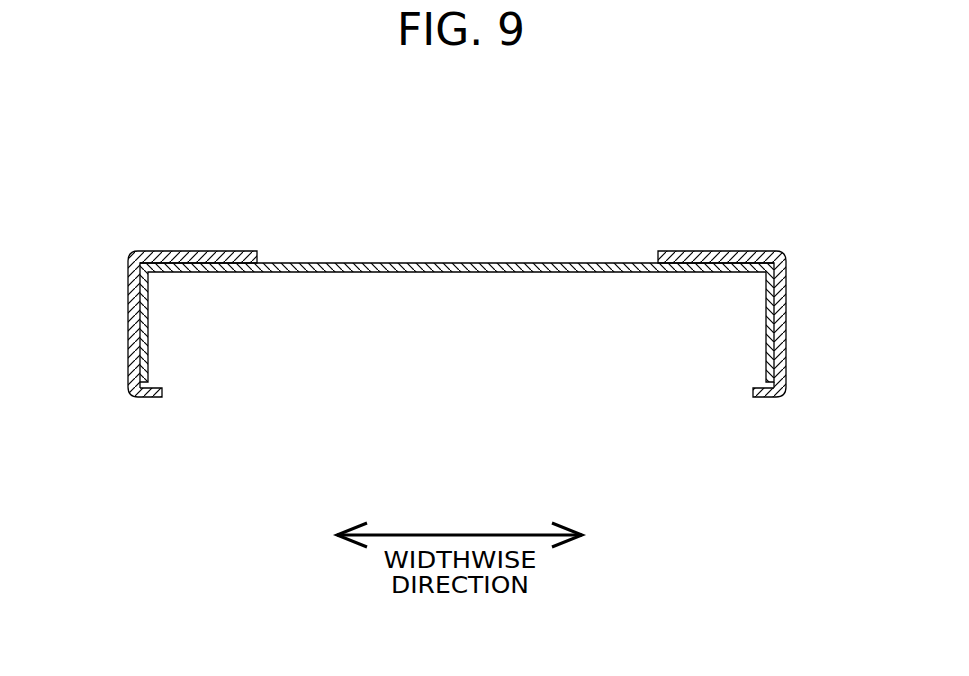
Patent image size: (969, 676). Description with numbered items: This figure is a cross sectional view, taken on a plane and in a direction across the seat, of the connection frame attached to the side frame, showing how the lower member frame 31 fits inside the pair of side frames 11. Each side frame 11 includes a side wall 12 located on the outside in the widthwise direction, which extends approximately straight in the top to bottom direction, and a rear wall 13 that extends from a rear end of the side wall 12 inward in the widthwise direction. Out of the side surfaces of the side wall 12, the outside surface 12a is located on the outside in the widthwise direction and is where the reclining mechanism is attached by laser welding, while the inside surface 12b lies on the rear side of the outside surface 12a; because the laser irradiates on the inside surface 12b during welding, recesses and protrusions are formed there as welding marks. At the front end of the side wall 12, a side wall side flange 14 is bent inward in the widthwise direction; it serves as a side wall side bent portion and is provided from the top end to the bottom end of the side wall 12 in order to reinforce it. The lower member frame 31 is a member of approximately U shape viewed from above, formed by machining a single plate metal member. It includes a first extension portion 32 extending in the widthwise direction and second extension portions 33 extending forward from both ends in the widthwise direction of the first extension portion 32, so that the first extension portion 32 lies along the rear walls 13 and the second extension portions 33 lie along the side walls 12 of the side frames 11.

The side frame 11 is at (463, 334).
The side wall 12 is at (463, 300).
The outside surface 12a is at (128, 290).
The inside surface 12b is at (130, 353).
The rear wall 13 is at (208, 259).
The side wall side flange 14 is at (149, 398).
The lower member frame 31 is at (457, 266).
The first extension portion 32 is at (397, 263).
The second extension portions 33 is at (147, 312).